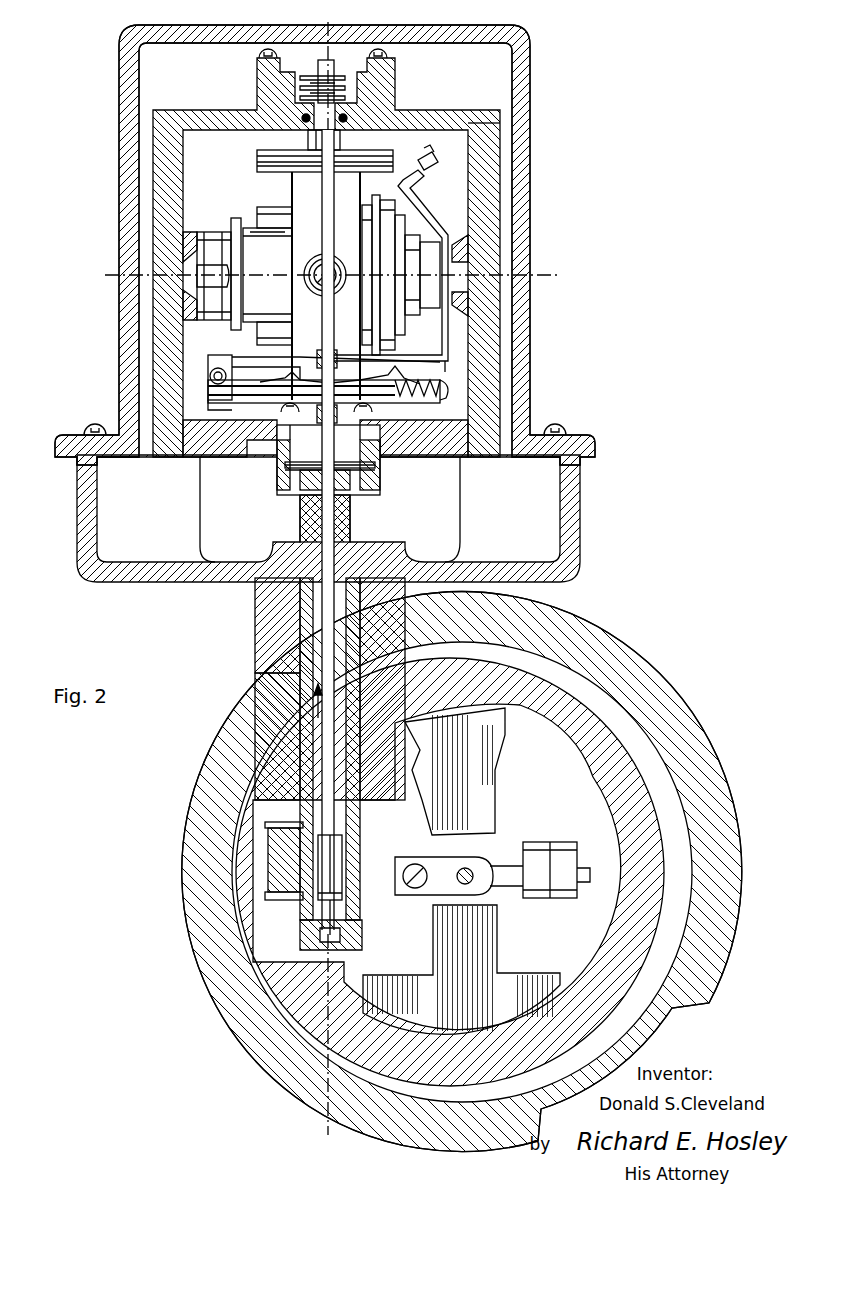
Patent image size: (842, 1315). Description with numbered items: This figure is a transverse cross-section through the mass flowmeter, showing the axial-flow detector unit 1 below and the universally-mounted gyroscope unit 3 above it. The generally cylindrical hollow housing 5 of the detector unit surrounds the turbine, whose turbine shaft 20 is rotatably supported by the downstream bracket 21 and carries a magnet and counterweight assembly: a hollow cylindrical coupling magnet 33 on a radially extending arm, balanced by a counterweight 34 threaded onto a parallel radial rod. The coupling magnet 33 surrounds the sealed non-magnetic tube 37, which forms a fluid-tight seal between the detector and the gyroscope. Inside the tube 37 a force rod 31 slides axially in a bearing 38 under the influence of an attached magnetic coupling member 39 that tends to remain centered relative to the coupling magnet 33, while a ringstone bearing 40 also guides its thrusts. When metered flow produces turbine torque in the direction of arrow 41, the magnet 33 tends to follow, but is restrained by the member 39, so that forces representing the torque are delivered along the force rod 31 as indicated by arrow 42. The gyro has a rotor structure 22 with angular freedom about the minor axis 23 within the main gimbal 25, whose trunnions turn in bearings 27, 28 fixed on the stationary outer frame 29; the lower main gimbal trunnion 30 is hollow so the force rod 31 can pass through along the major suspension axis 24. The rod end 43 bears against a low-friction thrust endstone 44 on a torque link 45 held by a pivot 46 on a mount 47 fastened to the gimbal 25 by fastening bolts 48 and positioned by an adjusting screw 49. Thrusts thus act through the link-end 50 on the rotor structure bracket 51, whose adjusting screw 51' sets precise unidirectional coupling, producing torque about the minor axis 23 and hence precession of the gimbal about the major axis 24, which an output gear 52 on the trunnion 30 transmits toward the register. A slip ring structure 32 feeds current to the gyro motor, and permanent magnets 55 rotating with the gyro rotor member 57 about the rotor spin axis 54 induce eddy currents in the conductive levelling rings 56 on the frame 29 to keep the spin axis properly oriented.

The axial-flow detector unit 1 is at (628, 639).
The gyroscope unit 3 is at (552, 270).
The housing 5 is at (200, 802).
The turbine shaft 20 is at (468, 872).
The downstream bracket 21 is at (617, 750).
The rotor structure 22 is at (261, 281).
The minor axis 23 is at (330, 254).
The major suspension axis 24 is at (329, 580).
The main gimbal 25 is at (314, 212).
The bearing 27 is at (305, 130).
The bearing 28 is at (295, 442).
The outer frame 29 is at (520, 318).
The lower main gimbal trunnion 30 is at (368, 442).
The force rod 31 is at (320, 592).
The slip ring structure 32 is at (345, 70).
The coupling magnet 33 is at (292, 868).
The counterweight 34 is at (562, 846).
The non-magnetic tube 37 is at (355, 830).
The bearing 38 is at (346, 932).
The magnetic coupling member 39 is at (325, 882).
The ringstone bearing 40 is at (345, 498).
The arrow 41 is at (567, 805).
The arrow 42 is at (303, 693).
The force rod end 43 is at (300, 372).
The thrust endstone 44 is at (327, 352).
The torque link 45 is at (448, 358).
The pivot 46 is at (208, 376).
The mount 47 is at (165, 415).
The fastening bolts 48 is at (372, 411).
The adjusting screw 49 is at (452, 382).
The link-end 50 is at (440, 176).
The rotor structure bracket 51 is at (388, 265).
The adjusting screw 51' is at (438, 151).
The output gear 52 is at (300, 466).
The rotor spin axis 54 is at (321, 275).
The permanent magnets 55 is at (220, 313).
The levelling rings 56 is at (470, 245).
The gyro rotor member 57 is at (275, 208).